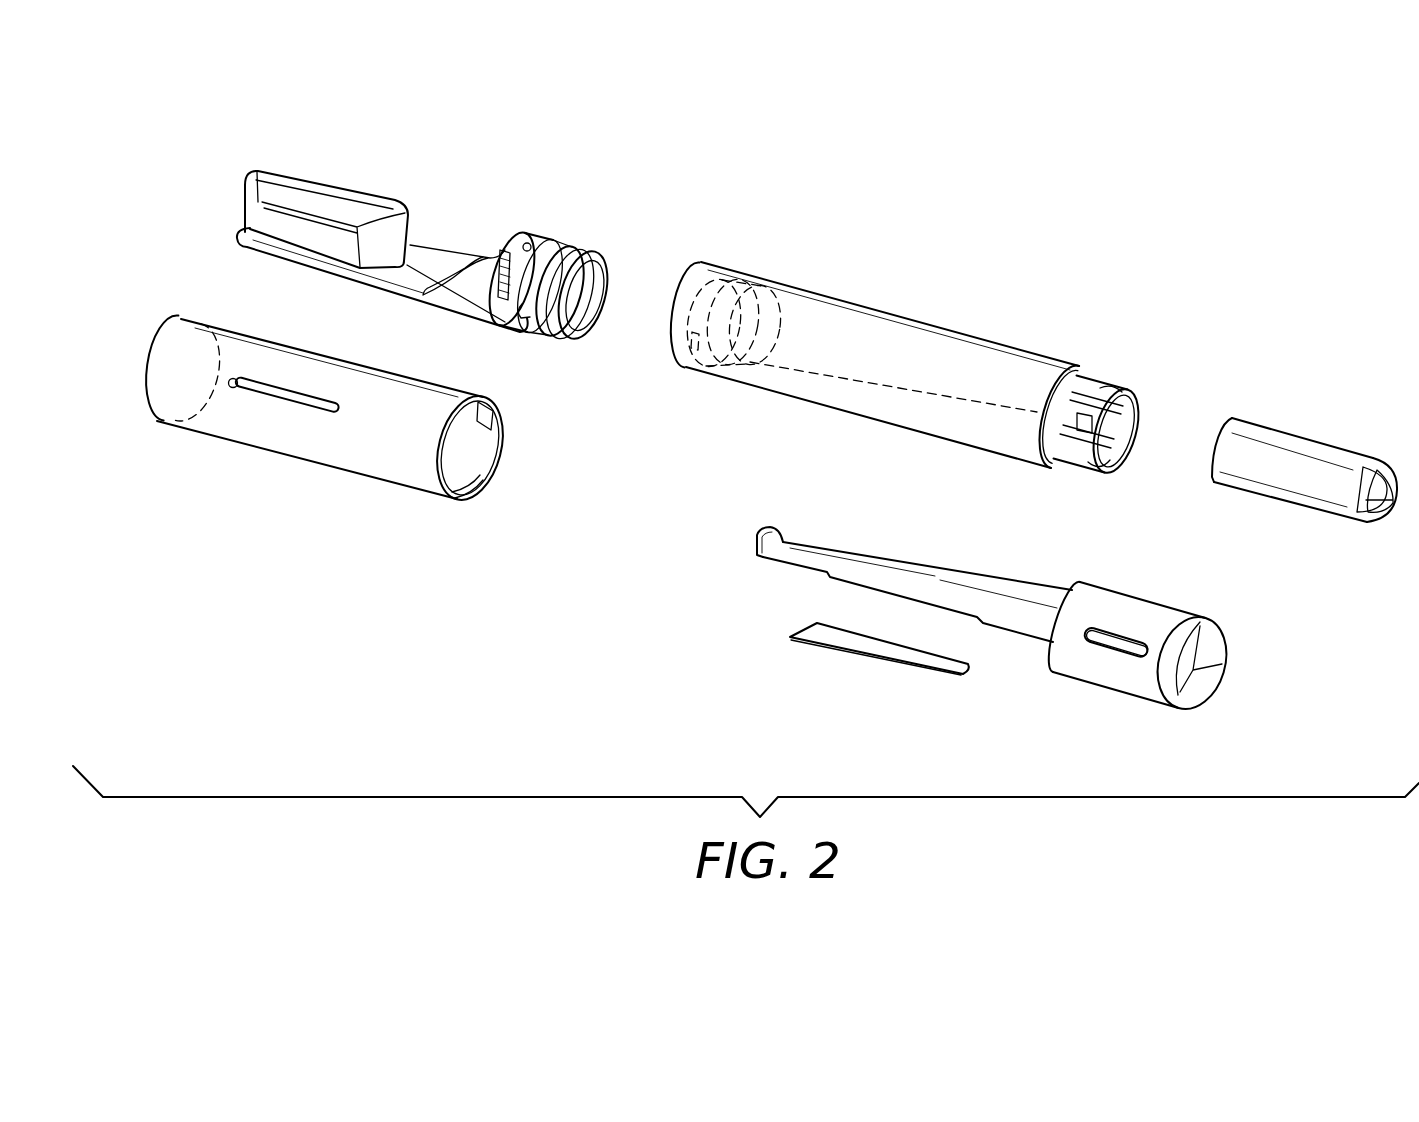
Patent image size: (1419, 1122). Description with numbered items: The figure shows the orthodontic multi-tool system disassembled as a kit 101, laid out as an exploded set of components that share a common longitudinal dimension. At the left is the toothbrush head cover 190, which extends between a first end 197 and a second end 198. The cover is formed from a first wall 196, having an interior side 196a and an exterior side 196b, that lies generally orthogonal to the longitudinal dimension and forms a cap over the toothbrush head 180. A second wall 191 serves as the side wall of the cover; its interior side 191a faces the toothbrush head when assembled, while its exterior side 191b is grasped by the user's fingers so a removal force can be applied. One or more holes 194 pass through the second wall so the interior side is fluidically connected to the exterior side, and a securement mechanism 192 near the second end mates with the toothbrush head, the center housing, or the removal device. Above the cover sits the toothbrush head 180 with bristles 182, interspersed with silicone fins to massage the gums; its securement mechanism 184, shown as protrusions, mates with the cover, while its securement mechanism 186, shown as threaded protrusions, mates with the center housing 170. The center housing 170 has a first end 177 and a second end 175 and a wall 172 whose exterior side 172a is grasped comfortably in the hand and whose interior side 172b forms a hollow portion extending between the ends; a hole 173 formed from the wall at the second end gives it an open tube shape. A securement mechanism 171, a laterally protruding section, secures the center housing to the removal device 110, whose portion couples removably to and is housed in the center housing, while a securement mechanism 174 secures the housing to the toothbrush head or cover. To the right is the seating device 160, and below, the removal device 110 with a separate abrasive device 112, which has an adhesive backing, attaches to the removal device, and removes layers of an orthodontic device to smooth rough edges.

The kit 101 is at (1011, 436).
The removal device 110 is at (1104, 572).
The abrasive device 112 is at (869, 689).
The seating device 160 is at (1265, 388).
The center housing 170 is at (931, 303).
The securement mechanism 171 is at (1110, 380).
The wall 172 is at (928, 333).
The exterior side 172a is at (928, 337).
The interior side 172b is at (1007, 380).
The hole 173 is at (690, 357).
The securement mechanism 174 is at (757, 370).
The second end 175 is at (718, 243).
The first end 177 is at (1079, 352).
The toothbrush head 180 is at (457, 228).
The bristles 182 is at (345, 190).
The securement mechanism 184 is at (513, 234).
The securement mechanism 186 is at (573, 248).
The toothbrush head cover 190 is at (326, 418).
The second wall 191 is at (326, 411).
The interior side 191a is at (460, 450).
The exterior side 191b is at (387, 403).
The securement mechanism 192 is at (500, 413).
The holes 194 is at (246, 395).
The first wall 196 is at (150, 383).
The interior side 196a is at (153, 372).
The exterior side 196b is at (147, 338).
The first end 197 is at (407, 521).
The second end 198 is at (178, 290).